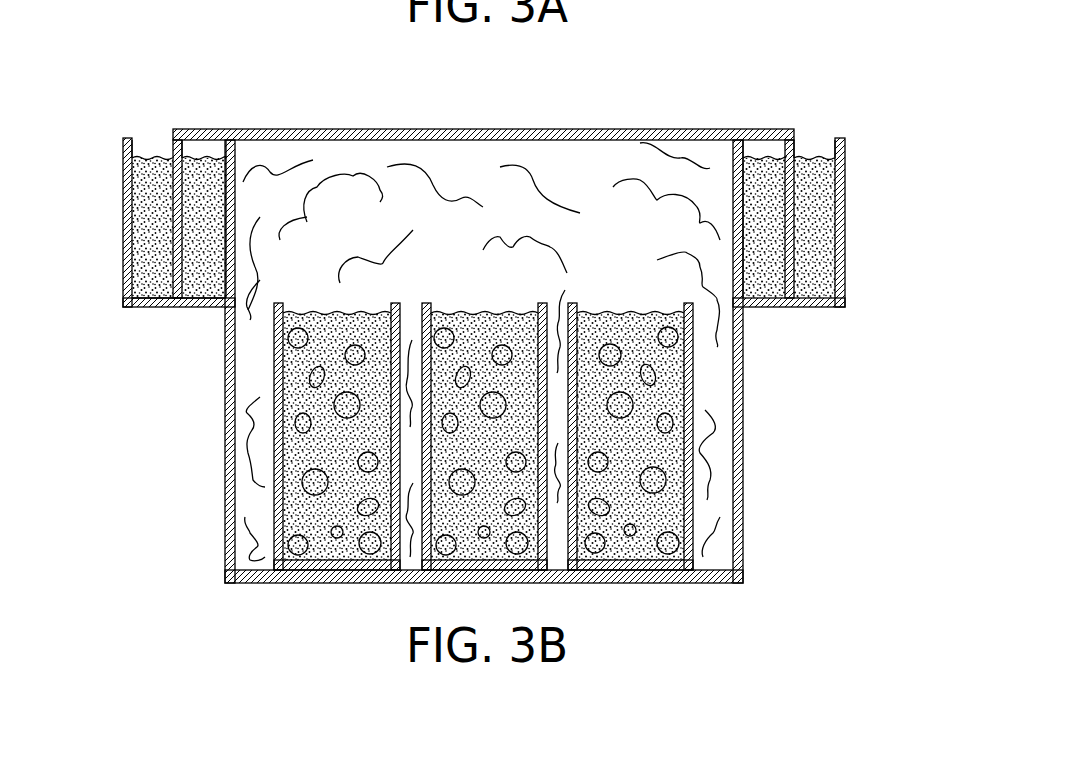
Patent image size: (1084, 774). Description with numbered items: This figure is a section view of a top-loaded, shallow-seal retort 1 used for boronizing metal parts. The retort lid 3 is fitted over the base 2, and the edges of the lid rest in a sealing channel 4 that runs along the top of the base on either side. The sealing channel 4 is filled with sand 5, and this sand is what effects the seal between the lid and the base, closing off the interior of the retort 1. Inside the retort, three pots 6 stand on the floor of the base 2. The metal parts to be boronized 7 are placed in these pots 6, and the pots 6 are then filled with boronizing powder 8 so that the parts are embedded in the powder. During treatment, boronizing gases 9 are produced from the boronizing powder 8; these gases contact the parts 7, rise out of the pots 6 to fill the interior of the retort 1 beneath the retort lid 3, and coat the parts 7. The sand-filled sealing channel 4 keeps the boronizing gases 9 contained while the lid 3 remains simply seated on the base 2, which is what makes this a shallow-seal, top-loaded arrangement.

The retort 1 is at (737, 72).
The base 2 is at (744, 437).
The retort lid 3 is at (585, 129).
The sealing channel 4 is at (122, 215).
The sand 5 is at (815, 228).
The pots 6 is at (274, 383).
The metal parts to be boronized 7 is at (300, 425).
The boronizing powder 8 is at (307, 517).
The boronizing gases 9 is at (343, 202).